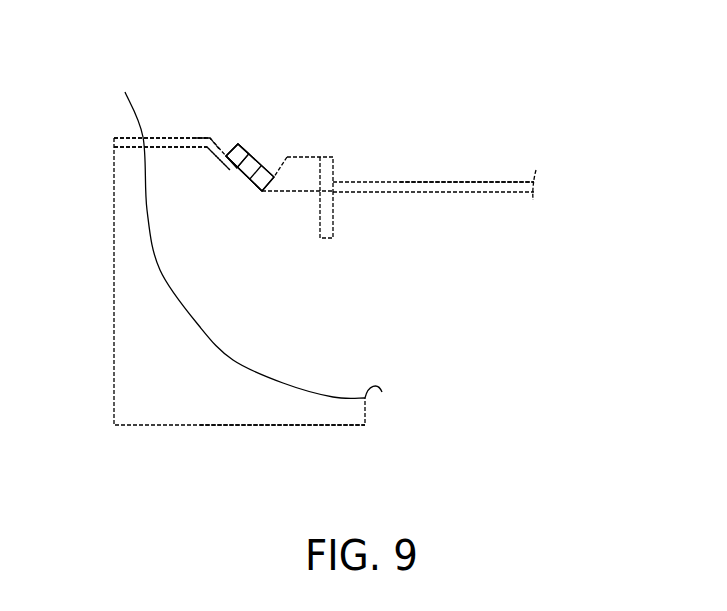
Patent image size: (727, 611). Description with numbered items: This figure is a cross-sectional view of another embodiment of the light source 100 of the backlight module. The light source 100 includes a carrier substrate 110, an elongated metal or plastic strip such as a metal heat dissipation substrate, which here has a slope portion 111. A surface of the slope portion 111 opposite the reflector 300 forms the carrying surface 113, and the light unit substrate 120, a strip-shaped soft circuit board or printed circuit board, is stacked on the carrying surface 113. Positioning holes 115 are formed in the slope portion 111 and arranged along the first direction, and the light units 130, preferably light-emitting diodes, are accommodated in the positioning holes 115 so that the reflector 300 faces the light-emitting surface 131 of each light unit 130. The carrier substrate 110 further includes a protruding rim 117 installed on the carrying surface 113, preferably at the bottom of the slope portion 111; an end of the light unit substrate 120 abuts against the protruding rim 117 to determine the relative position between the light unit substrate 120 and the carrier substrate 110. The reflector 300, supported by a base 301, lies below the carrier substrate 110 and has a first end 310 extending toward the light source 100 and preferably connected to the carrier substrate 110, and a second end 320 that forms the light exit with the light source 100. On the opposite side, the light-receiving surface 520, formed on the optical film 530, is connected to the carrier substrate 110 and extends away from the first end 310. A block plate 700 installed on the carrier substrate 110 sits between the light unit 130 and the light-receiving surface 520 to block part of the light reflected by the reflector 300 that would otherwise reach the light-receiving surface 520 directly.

The light source 100 is at (300, 30).
The carrier substrate 110 is at (297, 188).
The slope portion 111 is at (214, 151).
The carrying surface 113 is at (222, 140).
The positioning holes 115 is at (228, 170).
The protruding rim 117 is at (317, 168).
The light unit substrate 120 is at (242, 142).
The light unit 130 is at (250, 148).
The light-emitting surface 131 is at (243, 173).
The reflector 300 is at (223, 347).
The base 301 is at (242, 407).
The first end 310 is at (233, 231).
The second end 320 is at (382, 392).
The light-receiving surface 520 is at (493, 193).
The optical film 530 is at (463, 184).
The block plate 700 is at (327, 217).